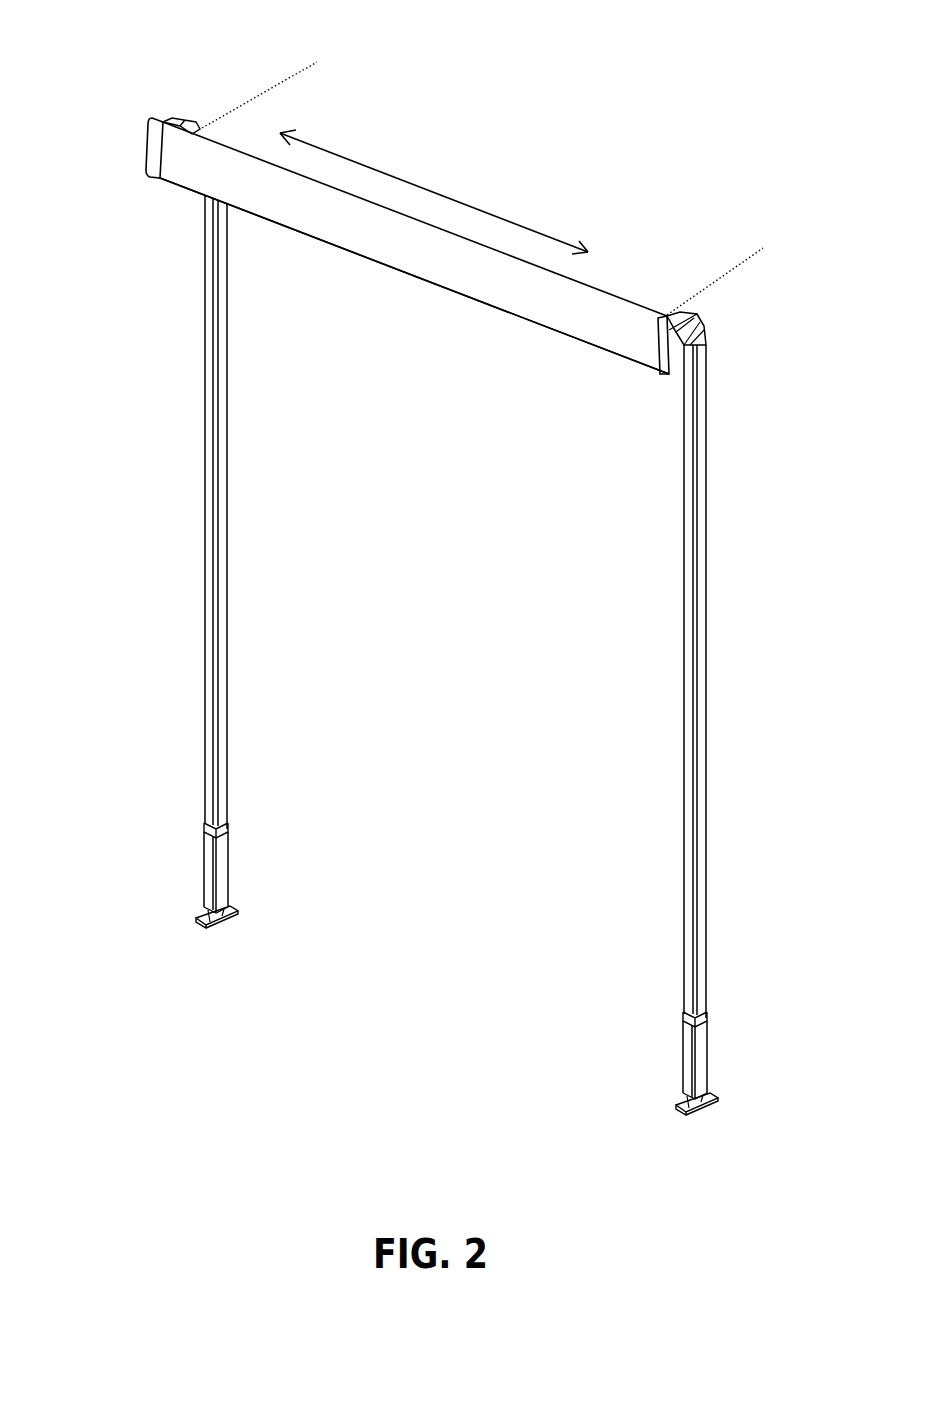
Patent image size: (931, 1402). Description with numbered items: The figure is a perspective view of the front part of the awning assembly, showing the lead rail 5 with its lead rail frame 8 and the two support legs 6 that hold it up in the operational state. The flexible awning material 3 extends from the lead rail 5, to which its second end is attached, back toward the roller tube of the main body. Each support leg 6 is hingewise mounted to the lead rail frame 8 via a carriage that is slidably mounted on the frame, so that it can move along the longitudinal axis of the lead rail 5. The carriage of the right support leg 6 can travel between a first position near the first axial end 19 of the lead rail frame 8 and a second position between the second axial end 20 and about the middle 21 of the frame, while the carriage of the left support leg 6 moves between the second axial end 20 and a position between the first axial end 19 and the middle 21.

The lead rail 5 is at (130, 238).
The lead rail frame 8 is at (285, 226).
The middle of the lead rail frame 21 is at (380, 238).
The second axial end of the lead rail frame 20 is at (150, 108).
The first axial end of the lead rail frame 19 is at (720, 318).
The flexible awning material 3 is at (285, 100).
The support legs 6 is at (227, 525).